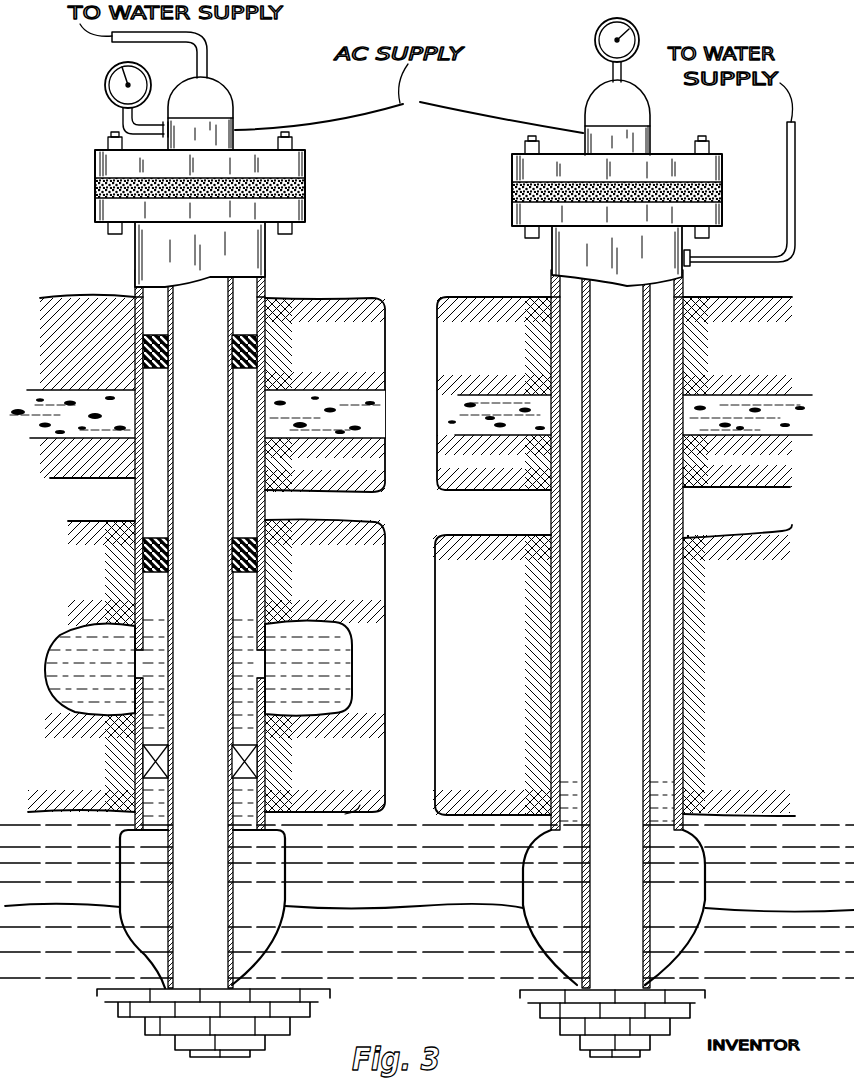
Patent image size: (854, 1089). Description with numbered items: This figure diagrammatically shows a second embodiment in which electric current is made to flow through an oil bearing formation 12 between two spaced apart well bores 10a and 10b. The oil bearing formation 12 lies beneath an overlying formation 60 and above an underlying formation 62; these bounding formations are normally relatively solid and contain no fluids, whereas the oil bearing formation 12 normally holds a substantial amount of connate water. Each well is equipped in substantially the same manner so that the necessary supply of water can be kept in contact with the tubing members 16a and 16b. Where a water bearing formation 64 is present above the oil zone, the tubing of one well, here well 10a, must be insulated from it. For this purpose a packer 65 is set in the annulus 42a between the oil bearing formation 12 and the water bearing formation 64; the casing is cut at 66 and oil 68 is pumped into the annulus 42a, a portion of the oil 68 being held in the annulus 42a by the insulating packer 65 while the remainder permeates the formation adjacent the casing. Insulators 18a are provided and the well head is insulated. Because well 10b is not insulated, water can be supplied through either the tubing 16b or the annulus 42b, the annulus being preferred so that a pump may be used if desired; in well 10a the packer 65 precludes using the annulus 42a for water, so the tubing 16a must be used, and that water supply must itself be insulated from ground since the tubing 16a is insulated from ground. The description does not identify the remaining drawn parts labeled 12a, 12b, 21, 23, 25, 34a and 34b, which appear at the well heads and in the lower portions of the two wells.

The well bore 10a is at (130, 594).
The well bore 10b is at (685, 636).
The oil bearing formation 12 is at (487, 786).
The casing head (first well) 12a is at (265, 266).
The casing head (second well) 12b is at (552, 270).
The tubing member 16a is at (237, 132).
The tubing member 16b is at (653, 145).
The insulators 18a is at (252, 355).
The water table line 21 is at (375, 908).
The lower cavity of first well 23 is at (88, 874).
The lower cavity of second well 25 is at (128, 962).
The pressure vessel cap with gauge (first well) 34a is at (230, 90).
The pressure vessel cap with gauge (second well) 34b is at (590, 93).
The annulus 42a is at (135, 296).
The annulus 42b is at (683, 300).
The overlying formation 60 is at (345, 814).
The underlying formation 62 is at (153, 1020).
The water bearing formation 64 is at (355, 415).
The packer 65 is at (250, 760).
The cut in casing 66 is at (283, 668).
The oil 68 is at (335, 668).